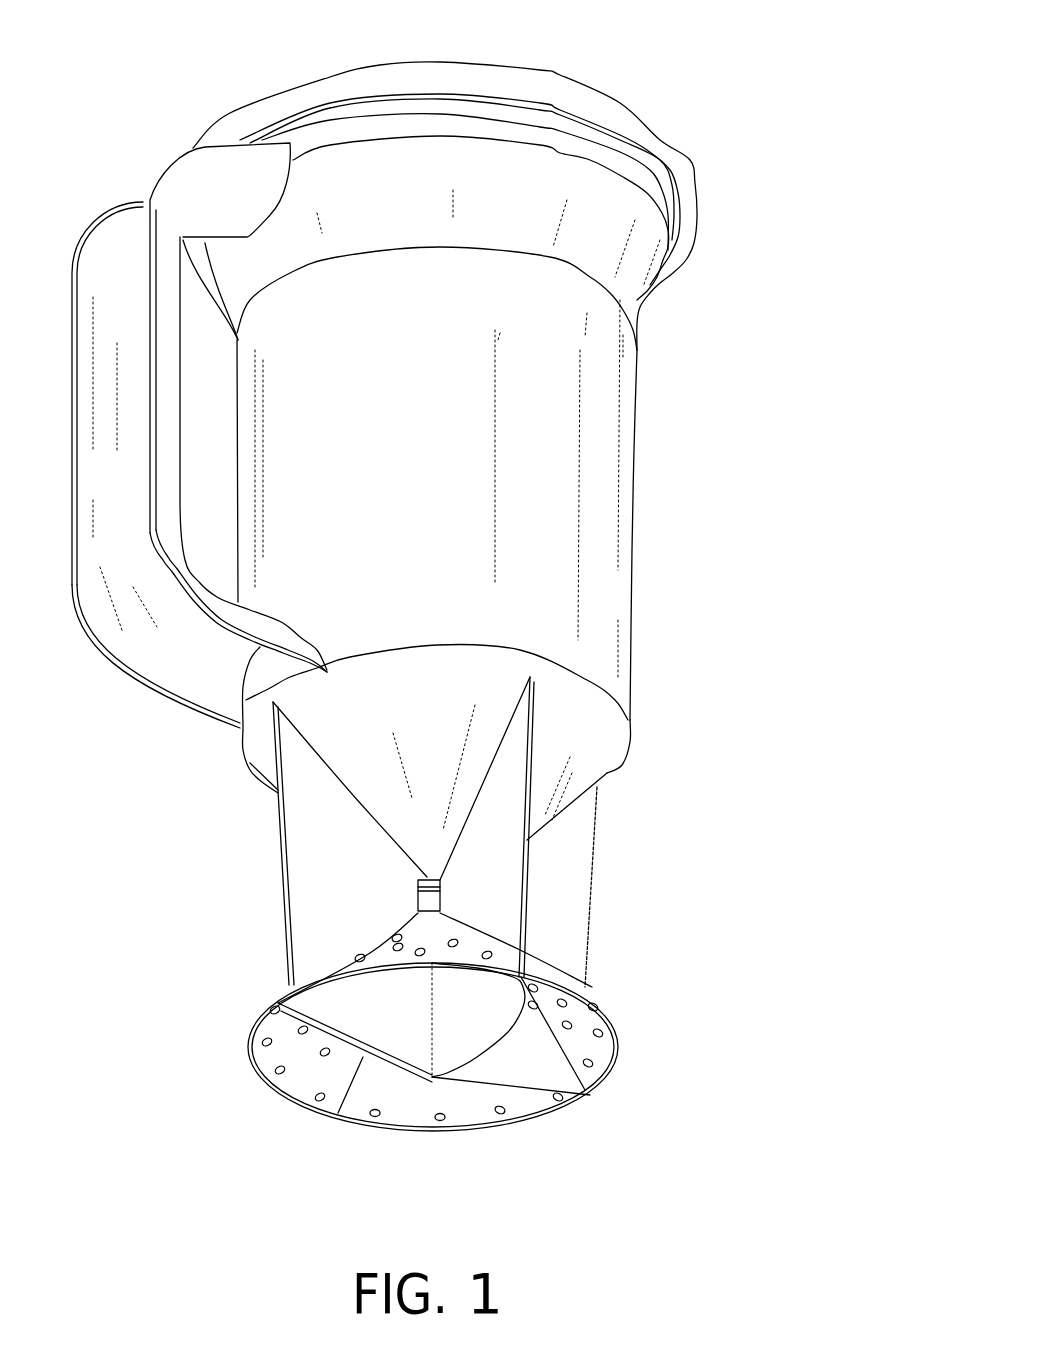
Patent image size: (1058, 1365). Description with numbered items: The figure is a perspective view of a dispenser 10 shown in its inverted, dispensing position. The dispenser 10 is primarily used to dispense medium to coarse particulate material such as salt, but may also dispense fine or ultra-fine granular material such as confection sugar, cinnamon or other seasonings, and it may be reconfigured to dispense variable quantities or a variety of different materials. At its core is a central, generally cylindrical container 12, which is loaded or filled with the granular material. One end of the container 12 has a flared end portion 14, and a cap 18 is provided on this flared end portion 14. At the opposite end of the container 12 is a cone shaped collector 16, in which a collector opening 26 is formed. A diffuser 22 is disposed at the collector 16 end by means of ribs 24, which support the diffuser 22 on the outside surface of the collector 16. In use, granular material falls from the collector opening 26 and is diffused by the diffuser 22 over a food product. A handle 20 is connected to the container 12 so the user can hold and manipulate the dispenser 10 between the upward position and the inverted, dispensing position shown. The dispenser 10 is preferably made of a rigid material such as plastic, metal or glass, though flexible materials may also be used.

The dispenser 10 is at (708, 497).
The container 12 is at (598, 588).
The flared end portion 14 is at (635, 293).
The cone shaped collector 16 is at (605, 757).
The cap 18 is at (627, 117).
The handle 20 is at (138, 647).
The diffuser 22 is at (605, 1018).
The ribs 24 is at (560, 895).
The collector opening 26 is at (430, 877).